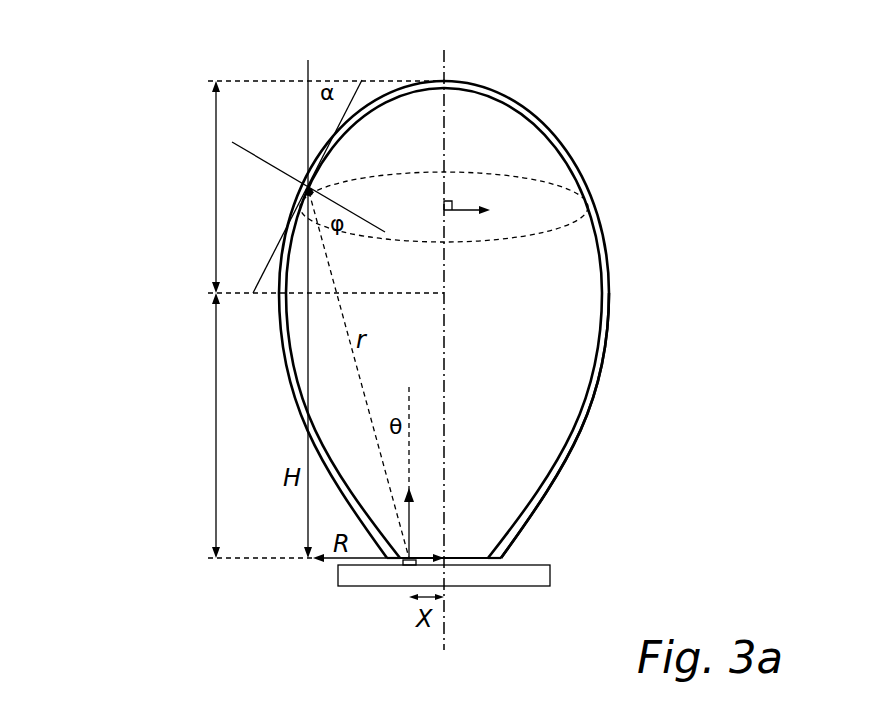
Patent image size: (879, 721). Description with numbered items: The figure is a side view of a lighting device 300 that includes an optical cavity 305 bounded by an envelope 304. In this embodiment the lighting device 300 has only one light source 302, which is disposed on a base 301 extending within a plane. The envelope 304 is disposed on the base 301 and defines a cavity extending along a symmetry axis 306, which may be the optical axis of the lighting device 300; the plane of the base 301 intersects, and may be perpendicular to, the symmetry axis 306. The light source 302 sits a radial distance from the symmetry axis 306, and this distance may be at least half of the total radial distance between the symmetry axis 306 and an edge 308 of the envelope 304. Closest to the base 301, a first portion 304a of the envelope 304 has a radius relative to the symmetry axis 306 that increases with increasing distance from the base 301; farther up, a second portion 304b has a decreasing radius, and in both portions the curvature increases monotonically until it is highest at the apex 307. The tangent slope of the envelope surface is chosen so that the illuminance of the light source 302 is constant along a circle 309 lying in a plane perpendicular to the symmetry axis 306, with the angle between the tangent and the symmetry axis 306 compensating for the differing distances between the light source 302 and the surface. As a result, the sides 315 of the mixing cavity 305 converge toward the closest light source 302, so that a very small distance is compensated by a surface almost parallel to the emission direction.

The lighting device 300 is at (180, 110).
The base 301 is at (533, 580).
The light source 302 is at (407, 585).
The envelope 304 is at (543, 125).
The first portion of the envelope 304a is at (231, 425).
The second portion of the envelope 304b is at (296, 187).
The optical cavity 305 is at (397, 135).
The symmetry axis 306 is at (445, 586).
The apex 307 is at (444, 81).
The edge of the envelope 308 is at (513, 540).
The circle 309 is at (565, 190).
The sides of the mixing cavity 315 is at (593, 392).